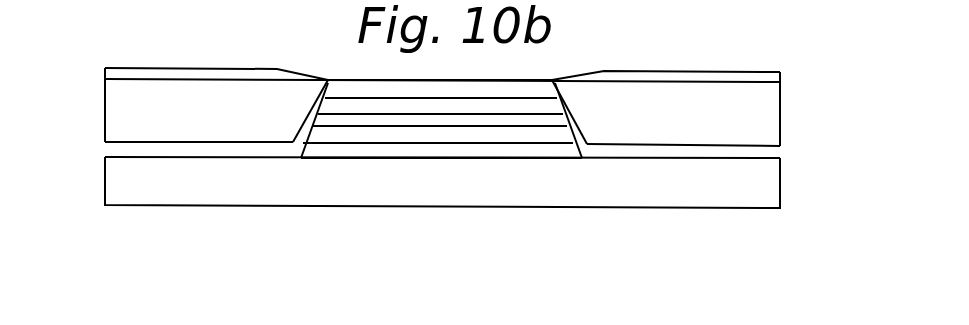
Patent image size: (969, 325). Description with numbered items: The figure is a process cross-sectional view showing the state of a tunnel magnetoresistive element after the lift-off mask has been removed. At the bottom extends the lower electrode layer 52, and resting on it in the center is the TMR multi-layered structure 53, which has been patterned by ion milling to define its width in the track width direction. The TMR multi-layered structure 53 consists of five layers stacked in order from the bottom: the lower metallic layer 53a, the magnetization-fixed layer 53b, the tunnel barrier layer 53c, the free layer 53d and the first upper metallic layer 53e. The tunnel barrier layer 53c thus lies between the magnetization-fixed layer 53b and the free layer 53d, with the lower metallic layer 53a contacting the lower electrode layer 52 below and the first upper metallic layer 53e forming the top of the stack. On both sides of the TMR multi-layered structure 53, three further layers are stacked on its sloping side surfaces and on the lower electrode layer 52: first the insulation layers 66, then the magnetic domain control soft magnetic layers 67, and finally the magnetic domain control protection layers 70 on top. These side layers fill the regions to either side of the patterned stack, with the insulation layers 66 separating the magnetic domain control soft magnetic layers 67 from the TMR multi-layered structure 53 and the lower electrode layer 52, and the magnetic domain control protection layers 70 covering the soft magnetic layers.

The lower electrode layer 52 is at (770, 183).
The insulation layer 66 is at (120, 150).
The magnetic domain control soft magnetic layer 67 is at (120, 108).
The magnetic domain control protection layer 70 is at (115, 74).
The TMR multi-layered structure 53 is at (602, 257).
The lower metallic layer 53a is at (340, 150).
The magnetization-fixed layer 53b is at (398, 133).
The tunnel barrier layer 53c is at (456, 120).
The free layer 53d is at (492, 107).
The first upper metallic layer 53e is at (520, 92).